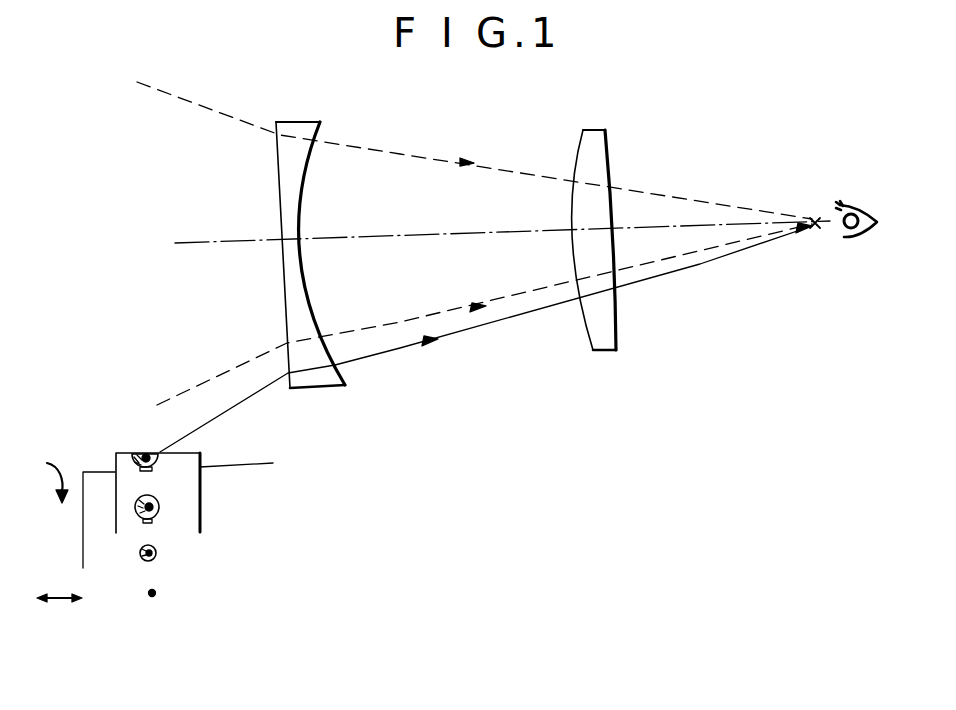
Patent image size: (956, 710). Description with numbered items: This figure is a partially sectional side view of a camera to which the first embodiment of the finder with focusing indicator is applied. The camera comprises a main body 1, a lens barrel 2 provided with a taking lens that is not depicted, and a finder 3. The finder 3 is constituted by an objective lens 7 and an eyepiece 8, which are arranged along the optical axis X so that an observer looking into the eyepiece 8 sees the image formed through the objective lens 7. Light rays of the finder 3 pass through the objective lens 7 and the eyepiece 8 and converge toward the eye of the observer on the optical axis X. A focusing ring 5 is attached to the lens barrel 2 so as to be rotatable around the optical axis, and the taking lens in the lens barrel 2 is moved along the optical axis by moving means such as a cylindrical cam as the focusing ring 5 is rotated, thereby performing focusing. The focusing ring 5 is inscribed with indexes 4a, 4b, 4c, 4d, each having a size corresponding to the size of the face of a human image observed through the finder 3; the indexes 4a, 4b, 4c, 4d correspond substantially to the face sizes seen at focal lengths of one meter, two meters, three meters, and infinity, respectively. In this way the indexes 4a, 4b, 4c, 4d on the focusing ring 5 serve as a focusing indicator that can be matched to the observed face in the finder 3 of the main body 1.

The main body 1 is at (138, 260).
The lens barrel 2 is at (98, 476).
The finder 3 is at (433, 136).
The index 4a is at (163, 467).
The index 4b is at (163, 523).
The index 4c is at (163, 565).
The index 4d is at (158, 607).
The focusing ring 5 is at (188, 452).
The objective lens 7 is at (301, 121).
The eyepiece 8 is at (607, 148).
The optical axis X is at (242, 244).